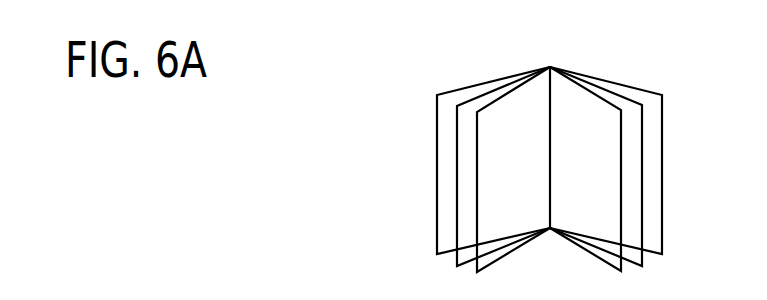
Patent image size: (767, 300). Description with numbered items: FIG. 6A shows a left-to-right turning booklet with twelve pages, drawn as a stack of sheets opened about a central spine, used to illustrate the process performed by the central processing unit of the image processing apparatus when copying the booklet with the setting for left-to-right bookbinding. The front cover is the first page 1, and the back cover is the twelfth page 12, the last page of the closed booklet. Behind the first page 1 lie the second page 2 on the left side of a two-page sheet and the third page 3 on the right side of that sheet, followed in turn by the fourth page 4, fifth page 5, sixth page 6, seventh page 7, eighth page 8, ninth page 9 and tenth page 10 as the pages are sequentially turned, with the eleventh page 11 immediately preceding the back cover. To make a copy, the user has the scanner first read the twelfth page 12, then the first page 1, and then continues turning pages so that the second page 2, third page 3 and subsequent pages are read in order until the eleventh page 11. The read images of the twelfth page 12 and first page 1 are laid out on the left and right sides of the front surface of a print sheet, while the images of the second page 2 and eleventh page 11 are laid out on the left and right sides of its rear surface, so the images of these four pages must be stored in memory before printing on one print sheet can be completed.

The first page 1 is at (469, 144).
The second page 2 is at (450, 113).
The third page 3 is at (469, 150).
The fourth page 4 is at (465, 143).
The fifth page 5 is at (469, 153).
The sixth page 6 is at (487, 175).
The seventh page 7 is at (605, 178).
The eighth page 8 is at (631, 152).
The ninth page 9 is at (632, 147).
The tenth page 10 is at (631, 150).
The eleventh page 11 is at (650, 113).
The twelfth page 12 is at (637, 144).